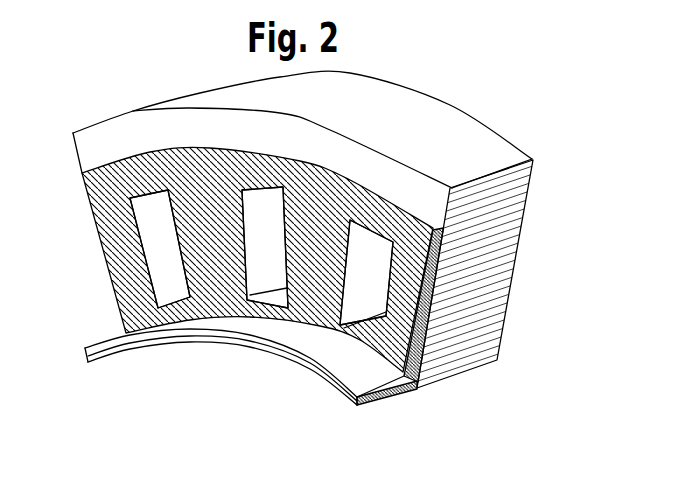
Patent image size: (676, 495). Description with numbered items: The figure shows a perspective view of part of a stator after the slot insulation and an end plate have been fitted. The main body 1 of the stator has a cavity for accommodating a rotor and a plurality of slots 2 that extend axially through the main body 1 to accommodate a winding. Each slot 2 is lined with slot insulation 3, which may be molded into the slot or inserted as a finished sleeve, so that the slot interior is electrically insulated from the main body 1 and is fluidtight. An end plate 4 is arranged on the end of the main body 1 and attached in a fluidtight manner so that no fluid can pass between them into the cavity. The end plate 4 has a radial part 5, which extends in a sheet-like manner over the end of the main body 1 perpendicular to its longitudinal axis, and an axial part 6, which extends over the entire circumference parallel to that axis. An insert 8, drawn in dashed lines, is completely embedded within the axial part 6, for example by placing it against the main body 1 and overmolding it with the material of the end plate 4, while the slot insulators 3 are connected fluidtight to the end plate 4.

The main body 1 is at (517, 133).
The slots 2 is at (177, 233).
The slot insulation 3 is at (390, 151).
The end plate 4 is at (77, 175).
The radial part 5 is at (443, 237).
The axial part 6 is at (415, 390).
The insert 8 is at (220, 345).